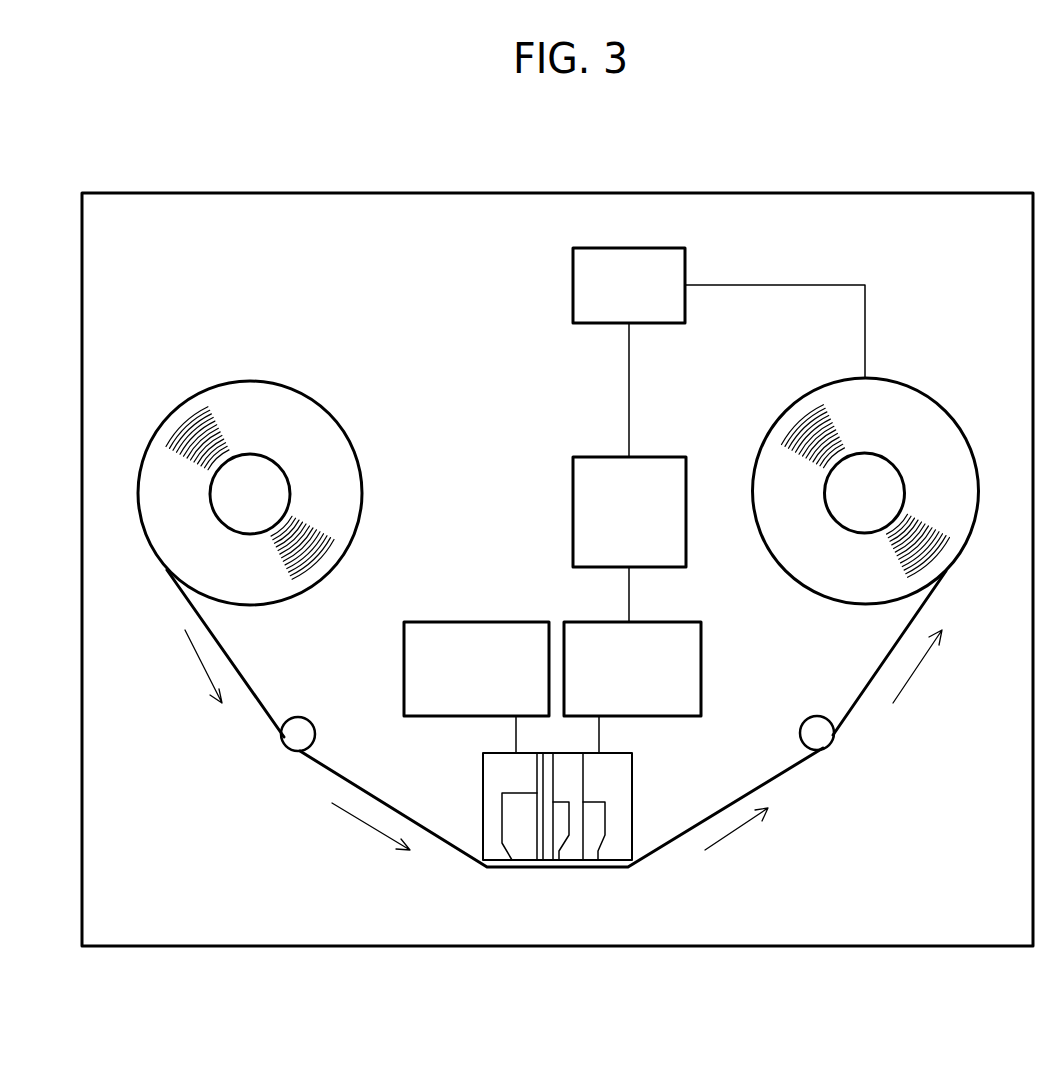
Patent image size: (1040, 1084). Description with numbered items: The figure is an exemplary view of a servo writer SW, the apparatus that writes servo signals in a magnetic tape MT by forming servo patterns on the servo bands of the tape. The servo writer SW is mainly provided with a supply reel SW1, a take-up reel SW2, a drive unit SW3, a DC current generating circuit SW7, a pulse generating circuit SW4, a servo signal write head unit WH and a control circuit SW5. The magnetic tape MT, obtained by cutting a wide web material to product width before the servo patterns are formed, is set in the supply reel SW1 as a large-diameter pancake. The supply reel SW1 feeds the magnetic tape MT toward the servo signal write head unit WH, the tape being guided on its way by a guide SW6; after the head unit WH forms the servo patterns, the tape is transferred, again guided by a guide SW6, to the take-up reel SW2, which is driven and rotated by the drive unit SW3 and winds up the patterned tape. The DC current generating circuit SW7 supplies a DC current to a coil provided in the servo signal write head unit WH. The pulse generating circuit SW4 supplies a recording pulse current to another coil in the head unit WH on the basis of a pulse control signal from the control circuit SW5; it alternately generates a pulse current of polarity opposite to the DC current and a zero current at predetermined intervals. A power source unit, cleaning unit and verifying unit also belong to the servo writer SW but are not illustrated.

The servo writer SW is at (644, 193).
The supply reel SW1 is at (290, 383).
The take-up reel SW2 is at (920, 393).
The drive unit SW3 is at (688, 260).
The pulse generating circuit SW4 is at (703, 640).
The control circuit SW5 is at (600, 457).
The guide SW6 is at (312, 720).
The DC current generating circuit SW7 is at (499, 622).
The magnetic tape MT is at (258, 707).
The servo signal write head unit WH is at (632, 800).